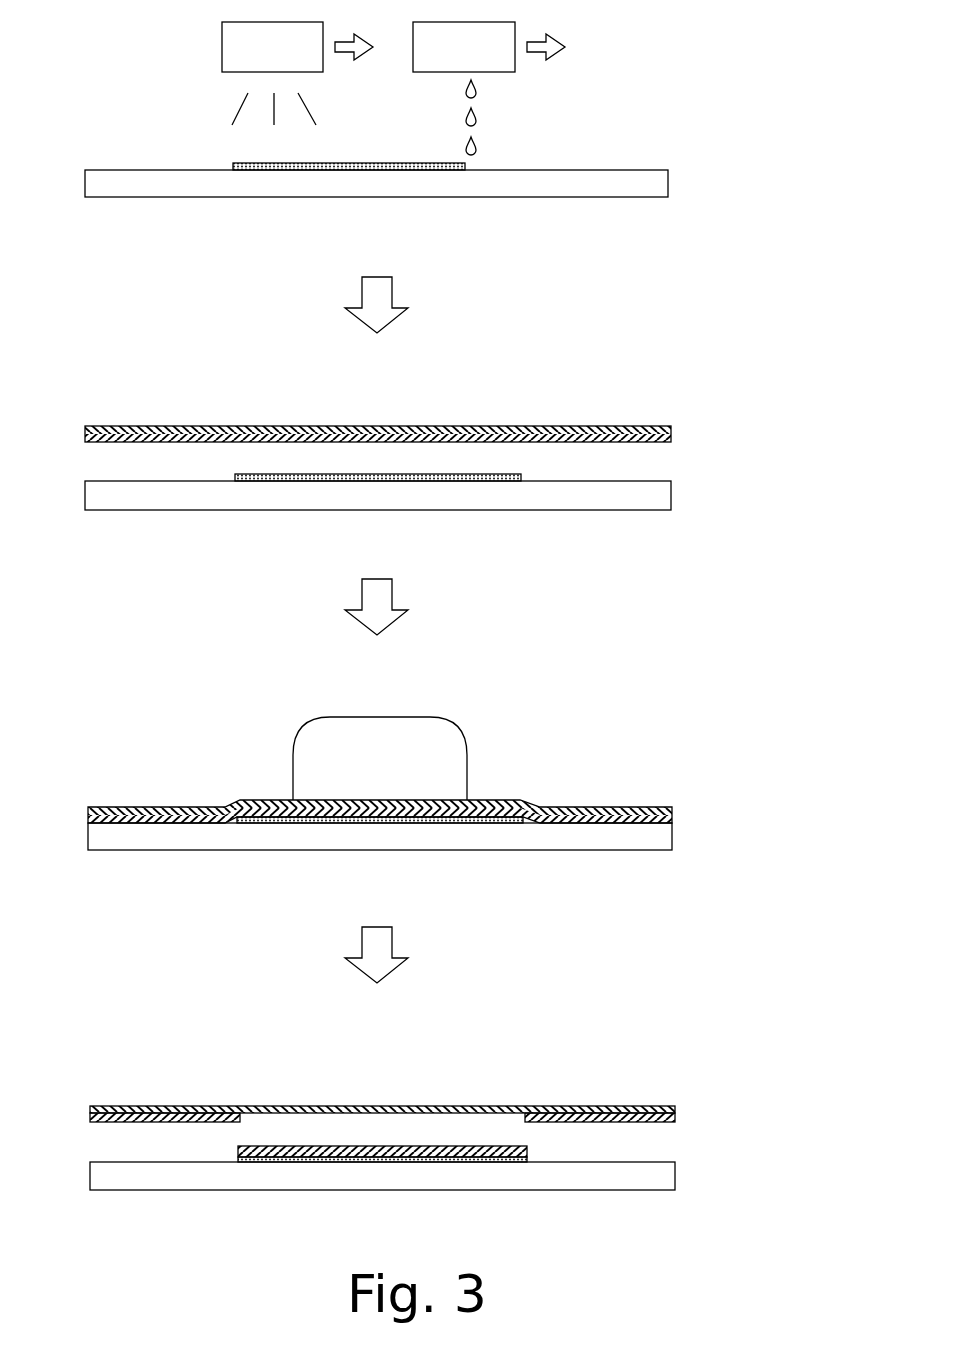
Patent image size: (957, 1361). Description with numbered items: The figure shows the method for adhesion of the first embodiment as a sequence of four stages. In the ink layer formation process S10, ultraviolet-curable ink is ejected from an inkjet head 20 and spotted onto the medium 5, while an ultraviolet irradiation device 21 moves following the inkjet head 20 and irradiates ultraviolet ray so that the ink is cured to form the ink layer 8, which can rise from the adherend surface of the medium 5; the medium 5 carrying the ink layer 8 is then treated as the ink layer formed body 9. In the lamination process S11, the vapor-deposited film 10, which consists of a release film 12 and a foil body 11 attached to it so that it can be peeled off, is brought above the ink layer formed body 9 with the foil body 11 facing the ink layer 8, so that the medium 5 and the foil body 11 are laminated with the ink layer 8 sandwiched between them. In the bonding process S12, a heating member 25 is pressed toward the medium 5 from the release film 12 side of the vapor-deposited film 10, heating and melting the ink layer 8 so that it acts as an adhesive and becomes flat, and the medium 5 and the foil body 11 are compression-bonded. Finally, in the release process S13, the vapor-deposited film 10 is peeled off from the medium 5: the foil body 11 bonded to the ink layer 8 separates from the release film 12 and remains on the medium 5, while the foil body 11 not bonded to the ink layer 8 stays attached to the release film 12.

The medium 5 is at (669, 181).
The ink layer 8 is at (233, 166).
The ink layer formed body 9 is at (691, 488).
The vapor-deposited film 10 is at (381, 434).
The foil body 11 is at (85, 437).
The release film 12 is at (85, 431).
The inkjet head 20 is at (467, 22).
The ultraviolet irradiation device 21 is at (276, 22).
The heating member 25 is at (470, 752).
The ink layer formation process S10 is at (723, 121).
The lamination process S11 is at (724, 379).
The bonding process S12 is at (726, 760).
The release process S13 is at (728, 1060).